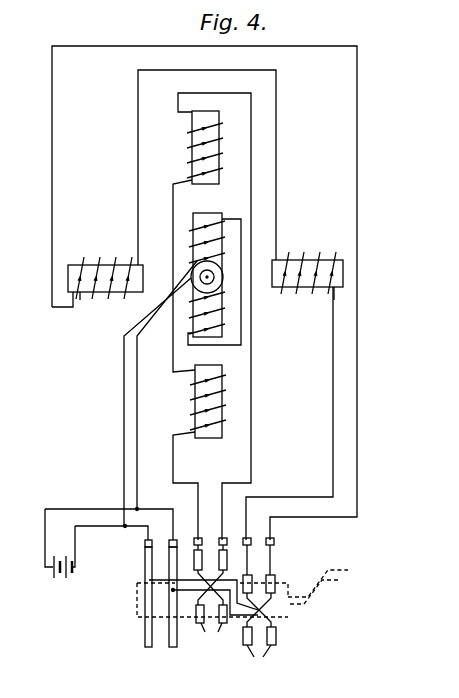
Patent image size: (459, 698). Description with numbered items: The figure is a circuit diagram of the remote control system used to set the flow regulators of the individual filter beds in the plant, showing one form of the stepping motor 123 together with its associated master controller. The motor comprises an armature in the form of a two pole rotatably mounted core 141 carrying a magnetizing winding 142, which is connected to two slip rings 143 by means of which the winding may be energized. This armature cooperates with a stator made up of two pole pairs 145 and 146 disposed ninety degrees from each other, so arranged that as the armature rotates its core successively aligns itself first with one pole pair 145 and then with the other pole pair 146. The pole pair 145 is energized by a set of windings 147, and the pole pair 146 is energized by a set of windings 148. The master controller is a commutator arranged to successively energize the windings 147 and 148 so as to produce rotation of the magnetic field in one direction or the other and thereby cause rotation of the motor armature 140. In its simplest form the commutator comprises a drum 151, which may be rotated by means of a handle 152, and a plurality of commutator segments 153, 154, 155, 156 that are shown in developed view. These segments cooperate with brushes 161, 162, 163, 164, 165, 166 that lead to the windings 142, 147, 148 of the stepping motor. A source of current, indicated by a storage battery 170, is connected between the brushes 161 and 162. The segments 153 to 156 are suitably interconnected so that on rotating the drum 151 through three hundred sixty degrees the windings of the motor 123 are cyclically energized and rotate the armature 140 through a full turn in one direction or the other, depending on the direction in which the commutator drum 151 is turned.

The stepping motor 123 is at (318, 172).
The motor armature 140 is at (226, 249).
The two pole rotatably mounted core 141 is at (197, 213).
The magnetizing winding 142 is at (222, 222).
The slip rings 143 is at (220, 281).
The pole pair 145 is at (207, 111).
The pole pair 146 is at (80, 300).
The windings 147 is at (190, 146).
The windings 148 is at (82, 263).
The drum 151 is at (284, 610).
The handle 152 is at (338, 582).
The commutator segment 153 is at (147, 648).
The commutator segment 154 is at (175, 648).
The commutator segment 155 is at (210, 594).
The commutator segment 156 is at (259, 606).
The brush 161 is at (149, 539).
The brush 162 is at (177, 539).
The brush 163 is at (200, 537).
The brush 164 is at (224, 537).
The brush 165 is at (249, 537).
The brush 166 is at (275, 541).
The storage battery 170 is at (70, 572).